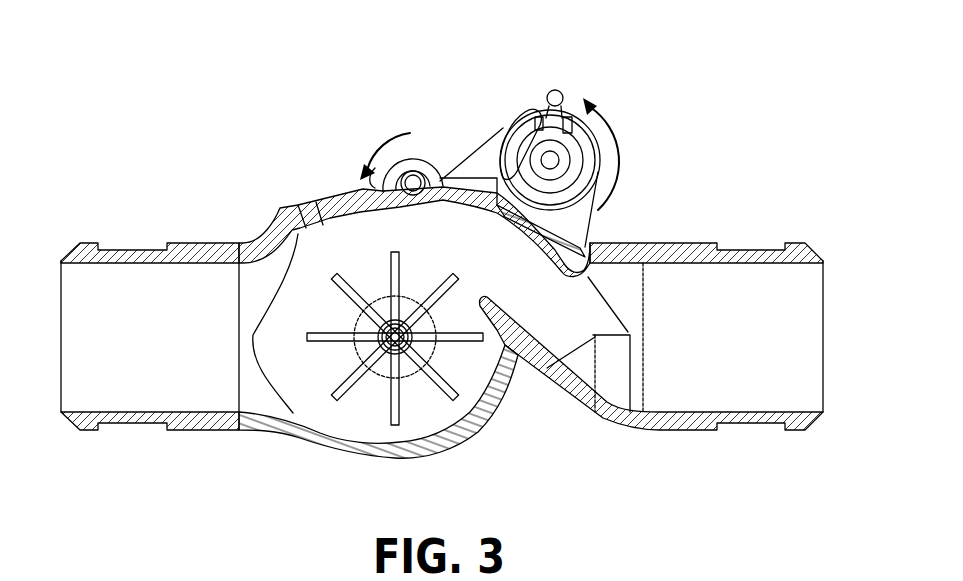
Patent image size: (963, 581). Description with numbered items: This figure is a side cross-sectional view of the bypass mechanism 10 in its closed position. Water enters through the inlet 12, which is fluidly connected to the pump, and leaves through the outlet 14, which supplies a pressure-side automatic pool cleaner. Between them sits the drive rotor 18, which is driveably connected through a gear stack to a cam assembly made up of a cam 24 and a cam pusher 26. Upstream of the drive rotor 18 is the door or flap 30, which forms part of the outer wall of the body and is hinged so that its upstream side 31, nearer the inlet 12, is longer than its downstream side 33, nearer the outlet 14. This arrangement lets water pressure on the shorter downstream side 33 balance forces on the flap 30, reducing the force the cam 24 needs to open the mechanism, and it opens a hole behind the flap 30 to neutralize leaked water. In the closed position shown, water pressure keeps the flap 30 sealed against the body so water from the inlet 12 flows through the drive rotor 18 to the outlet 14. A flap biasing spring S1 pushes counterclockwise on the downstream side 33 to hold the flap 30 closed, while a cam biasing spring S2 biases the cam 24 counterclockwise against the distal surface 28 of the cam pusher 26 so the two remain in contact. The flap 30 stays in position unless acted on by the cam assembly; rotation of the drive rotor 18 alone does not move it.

The bypass mechanism 10 is at (103, 42).
The inlet 12 is at (823, 305).
The outlet 14 is at (61, 305).
The drive rotor 18 is at (350, 380).
The cam 24 is at (553, 90).
The cam pusher 26 is at (513, 137).
The distal surface 28 is at (563, 112).
The flap 30 is at (596, 249).
The upstream side 31 is at (490, 218).
The downstream side 33 is at (311, 216).
The flap biasing spring S1 is at (368, 147).
The cam biasing spring S2 is at (620, 129).